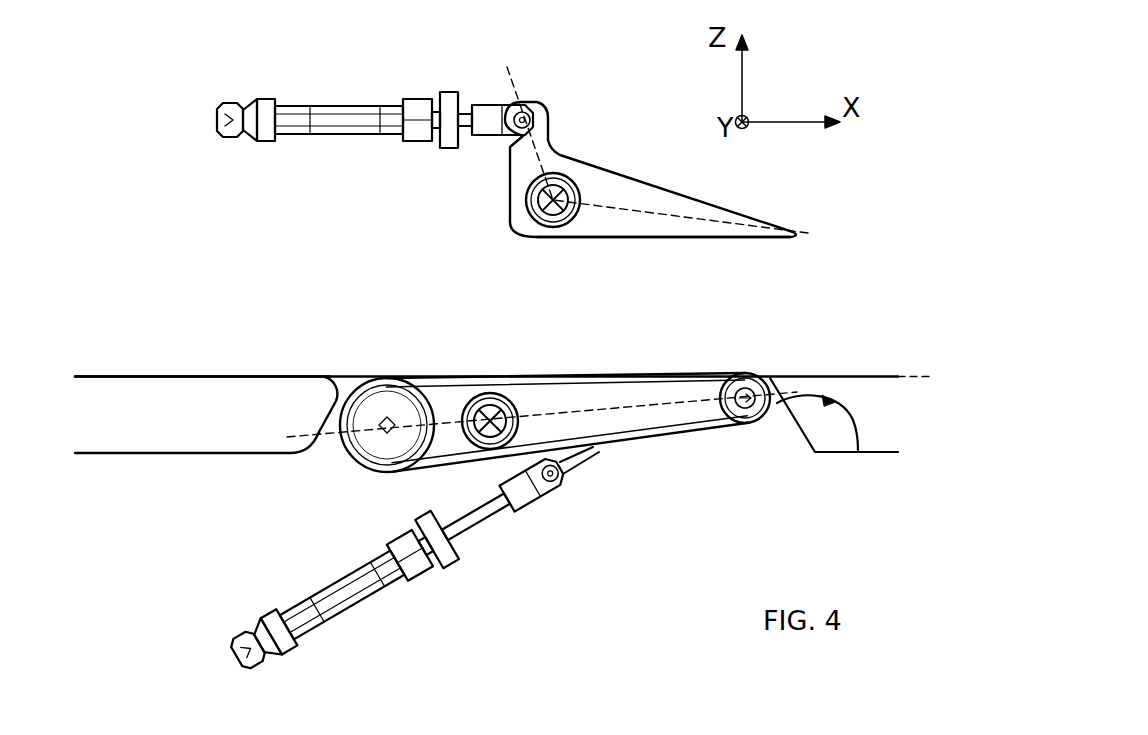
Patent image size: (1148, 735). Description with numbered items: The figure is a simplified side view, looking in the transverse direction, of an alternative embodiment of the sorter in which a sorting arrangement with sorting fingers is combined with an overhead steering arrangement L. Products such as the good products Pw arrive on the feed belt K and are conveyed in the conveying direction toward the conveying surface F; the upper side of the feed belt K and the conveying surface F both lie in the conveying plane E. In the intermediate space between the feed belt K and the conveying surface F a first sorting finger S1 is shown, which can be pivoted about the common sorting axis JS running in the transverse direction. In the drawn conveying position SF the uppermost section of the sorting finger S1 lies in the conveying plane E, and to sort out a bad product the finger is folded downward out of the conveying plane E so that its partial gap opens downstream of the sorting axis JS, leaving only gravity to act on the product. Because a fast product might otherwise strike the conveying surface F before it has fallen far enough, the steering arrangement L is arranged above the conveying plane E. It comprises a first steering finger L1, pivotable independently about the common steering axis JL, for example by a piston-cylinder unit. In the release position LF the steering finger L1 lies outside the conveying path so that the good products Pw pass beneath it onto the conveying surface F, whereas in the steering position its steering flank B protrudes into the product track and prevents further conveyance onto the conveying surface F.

The steering arrangement L is at (464, 74).
The release position LF is at (665, 144).
The first steering finger L1 is at (611, 193).
The steering axis JL is at (545, 206).
The steering flank B is at (643, 237).
The good products Pw is at (287, 340).
The feed belt K is at (130, 436).
The conveying position SF is at (523, 423).
The conveying surface F is at (812, 373).
The conveying plane E is at (913, 373).
The first sorting finger S1 is at (607, 418).
The sorting axis JS is at (500, 435).